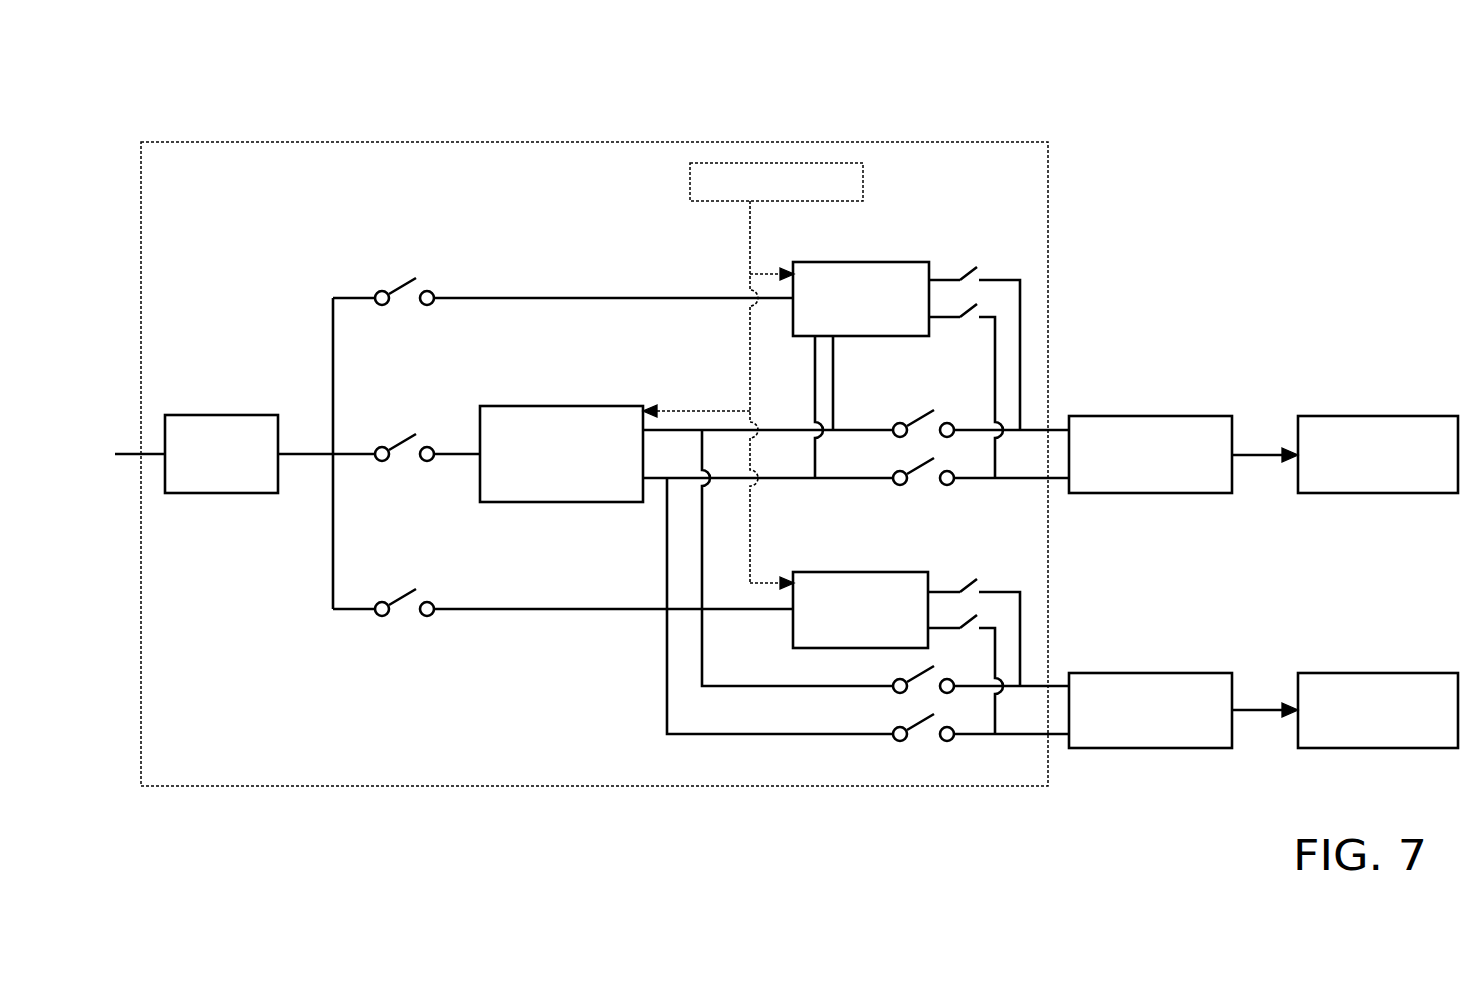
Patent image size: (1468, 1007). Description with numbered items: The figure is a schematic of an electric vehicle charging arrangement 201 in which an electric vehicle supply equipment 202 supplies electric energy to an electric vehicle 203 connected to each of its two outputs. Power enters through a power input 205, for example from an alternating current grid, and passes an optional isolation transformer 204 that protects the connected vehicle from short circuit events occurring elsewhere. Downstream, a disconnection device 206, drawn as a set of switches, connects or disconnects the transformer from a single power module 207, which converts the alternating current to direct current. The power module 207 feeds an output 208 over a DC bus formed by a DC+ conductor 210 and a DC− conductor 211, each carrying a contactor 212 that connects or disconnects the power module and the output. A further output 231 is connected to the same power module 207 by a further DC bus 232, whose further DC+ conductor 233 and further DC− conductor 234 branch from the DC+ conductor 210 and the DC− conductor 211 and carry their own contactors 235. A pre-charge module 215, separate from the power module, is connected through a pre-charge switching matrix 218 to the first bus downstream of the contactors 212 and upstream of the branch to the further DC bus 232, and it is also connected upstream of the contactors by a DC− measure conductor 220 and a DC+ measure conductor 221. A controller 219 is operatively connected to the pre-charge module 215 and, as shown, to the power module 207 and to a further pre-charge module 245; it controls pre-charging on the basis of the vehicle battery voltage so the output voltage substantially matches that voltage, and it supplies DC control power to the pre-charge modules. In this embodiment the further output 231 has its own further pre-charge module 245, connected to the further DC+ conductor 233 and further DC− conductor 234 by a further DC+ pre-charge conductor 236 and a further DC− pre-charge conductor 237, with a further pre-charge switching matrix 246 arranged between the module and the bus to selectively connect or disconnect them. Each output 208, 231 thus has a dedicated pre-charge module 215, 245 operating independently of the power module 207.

The electric vehicle charging arrangement 201 is at (160, 100).
The electric vehicle supply equipment 202 is at (280, 142).
The electric vehicle 203 is at (1360, 470).
The isolation transformer 204 is at (204, 469).
The power input 205 is at (128, 450).
The disconnection device 206 is at (405, 285).
The power module 207 is at (544, 469).
The output 208 is at (1132, 470).
The DC+ conductor 210 is at (683, 428).
The DC− conductor 211 is at (683, 482).
The contactor 212 is at (928, 415).
The pre-charge module 215 is at (843, 314).
The pre-charge switching matrix 218 is at (970, 308).
The controller 219 is at (758, 197).
The DC− measure conductor 220 is at (812, 398).
The DC+ measure conductor 221 is at (836, 378).
The further output 231 is at (1132, 725).
The further DC bus 232 is at (702, 738).
The further DC+ conductor 233 is at (765, 683).
The further DC− conductor 234 is at (778, 738).
The contactor 235 is at (920, 682).
The further DC+ pre-charge conductor 236 is at (1020, 608).
The further DC− pre-charge conductor 237 is at (997, 652).
The further pre-charge module 245 is at (843, 625).
The further pre-charge switching matrix 246 is at (966, 617).